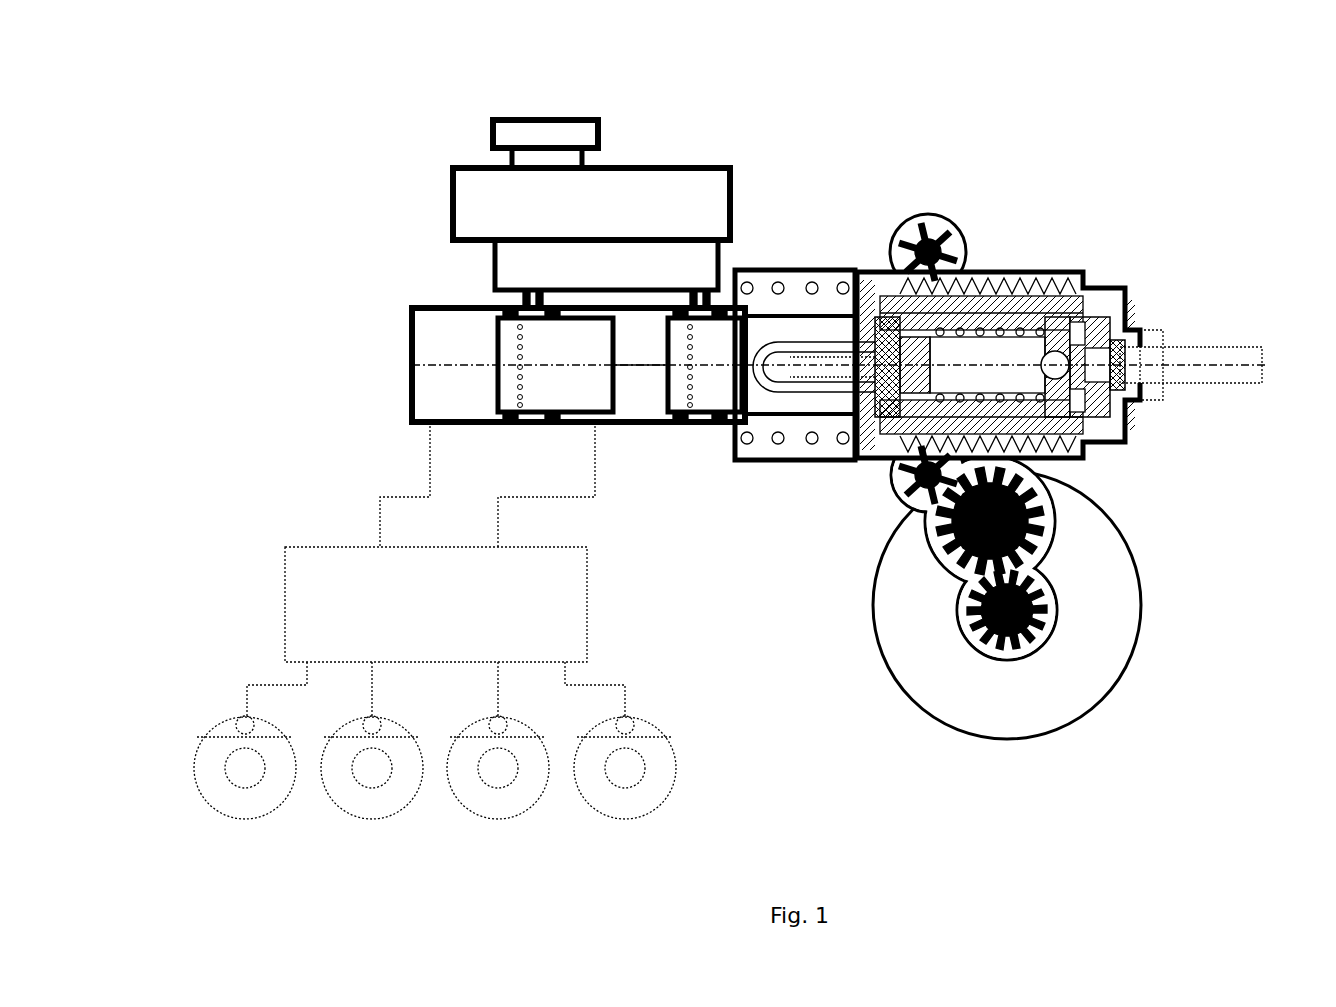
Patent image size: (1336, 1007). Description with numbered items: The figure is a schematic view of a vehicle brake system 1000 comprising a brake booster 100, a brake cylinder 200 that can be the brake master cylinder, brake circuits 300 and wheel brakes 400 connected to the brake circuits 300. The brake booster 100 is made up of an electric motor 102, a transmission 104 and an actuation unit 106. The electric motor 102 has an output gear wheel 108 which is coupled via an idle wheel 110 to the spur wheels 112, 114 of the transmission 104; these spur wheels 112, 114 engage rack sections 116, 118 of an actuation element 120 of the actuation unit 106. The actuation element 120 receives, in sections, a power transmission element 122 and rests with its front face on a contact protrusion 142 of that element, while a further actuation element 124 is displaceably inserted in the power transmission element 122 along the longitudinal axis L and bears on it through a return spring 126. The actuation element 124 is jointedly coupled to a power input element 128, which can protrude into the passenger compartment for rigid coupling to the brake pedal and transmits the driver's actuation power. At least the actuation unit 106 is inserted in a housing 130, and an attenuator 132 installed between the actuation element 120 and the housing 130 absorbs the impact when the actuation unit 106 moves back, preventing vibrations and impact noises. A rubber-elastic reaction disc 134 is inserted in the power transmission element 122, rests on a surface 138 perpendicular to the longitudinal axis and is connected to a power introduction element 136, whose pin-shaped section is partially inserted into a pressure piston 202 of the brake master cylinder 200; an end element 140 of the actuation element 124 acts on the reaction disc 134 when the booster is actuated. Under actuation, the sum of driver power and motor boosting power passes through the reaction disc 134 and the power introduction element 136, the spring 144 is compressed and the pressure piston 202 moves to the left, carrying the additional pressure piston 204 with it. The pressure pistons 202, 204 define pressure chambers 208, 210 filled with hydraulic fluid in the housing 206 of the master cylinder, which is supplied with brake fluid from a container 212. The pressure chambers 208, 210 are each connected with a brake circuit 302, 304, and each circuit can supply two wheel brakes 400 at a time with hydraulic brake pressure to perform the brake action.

The brake booster 100 is at (1003, 403).
The vehicle brake system 1000 is at (734, 457).
The electric motor 102 is at (1082, 647).
The transmission 104 is at (1010, 615).
The actuation unit 106 is at (1047, 200).
The output gear wheel 108 is at (1007, 607).
The idle wheel 110 is at (990, 535).
The spur wheel 112 is at (893, 495).
The spur wheel 114 is at (942, 222).
The rack section 116 is at (1048, 448).
The rack section 118 is at (1070, 300).
The actuation element 120 is at (1090, 430).
The power transmission element 122 is at (1010, 300).
The actuation element 124 is at (1098, 300).
The return spring 126 is at (975, 400).
The power input element 128 is at (1225, 352).
The housing 130 is at (1126, 418).
The attenuator 132 is at (1135, 300).
The reaction disc 134 is at (885, 378).
The end element 140 is at (917, 373).
The power introduction element 136 is at (783, 358).
The surface 138 is at (898, 305).
The contact protrusion 142 is at (872, 292).
The spring 144 is at (745, 286).
The brake master cylinder 200 is at (509, 266).
The pressure piston 202 is at (718, 382).
The pressure piston 204 is at (597, 390).
The housing 206 is at (412, 326).
The pressure chamber 208 is at (642, 385).
The pressure chamber 210 is at (432, 385).
The container 212 is at (640, 170).
The brake circuits 300 is at (434, 569).
The brake circuit 302 is at (380, 527).
The brake circuit 304 is at (498, 517).
The wheel brakes 400 is at (227, 805).